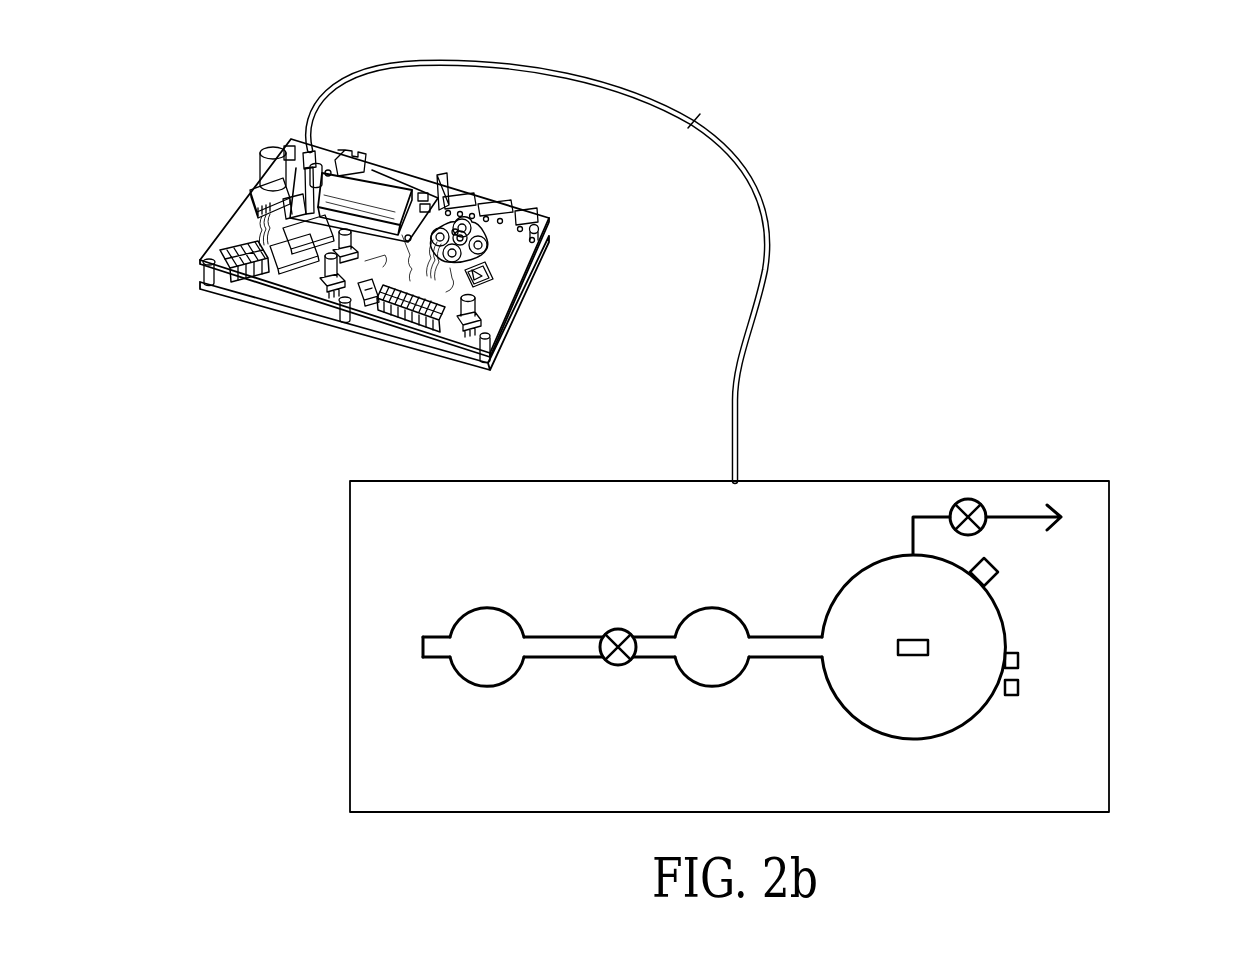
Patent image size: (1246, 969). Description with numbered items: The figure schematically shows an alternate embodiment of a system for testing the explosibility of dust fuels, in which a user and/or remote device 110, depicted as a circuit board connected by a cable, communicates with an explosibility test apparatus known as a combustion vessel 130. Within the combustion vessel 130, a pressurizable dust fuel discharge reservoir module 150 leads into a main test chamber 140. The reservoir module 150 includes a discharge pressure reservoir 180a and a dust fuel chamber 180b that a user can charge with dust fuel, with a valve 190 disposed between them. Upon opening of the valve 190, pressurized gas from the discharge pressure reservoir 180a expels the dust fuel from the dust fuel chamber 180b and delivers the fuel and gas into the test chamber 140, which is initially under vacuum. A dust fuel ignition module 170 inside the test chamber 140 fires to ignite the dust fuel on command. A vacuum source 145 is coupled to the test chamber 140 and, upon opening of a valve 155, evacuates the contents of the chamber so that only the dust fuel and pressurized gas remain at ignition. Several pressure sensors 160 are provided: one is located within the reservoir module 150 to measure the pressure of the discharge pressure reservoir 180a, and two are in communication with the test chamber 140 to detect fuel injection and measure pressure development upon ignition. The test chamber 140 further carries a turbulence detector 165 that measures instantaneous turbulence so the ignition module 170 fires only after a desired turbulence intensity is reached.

The remote device 110 is at (192, 208).
The combustion vessel 130 is at (1138, 470).
The main test chamber 140 is at (870, 706).
The vacuum source 145 is at (1023, 516).
The pressurizable dust fuel discharge reservoir module 150 is at (670, 566).
The valve 155 is at (965, 500).
The pressure sensor 160 is at (423, 645).
The turbulence detector 165 is at (992, 569).
The dust fuel ignition module 170 is at (908, 645).
The discharge pressure reservoir 180a is at (478, 682).
The dust fuel chamber 180b is at (701, 682).
The valve 190 is at (612, 664).